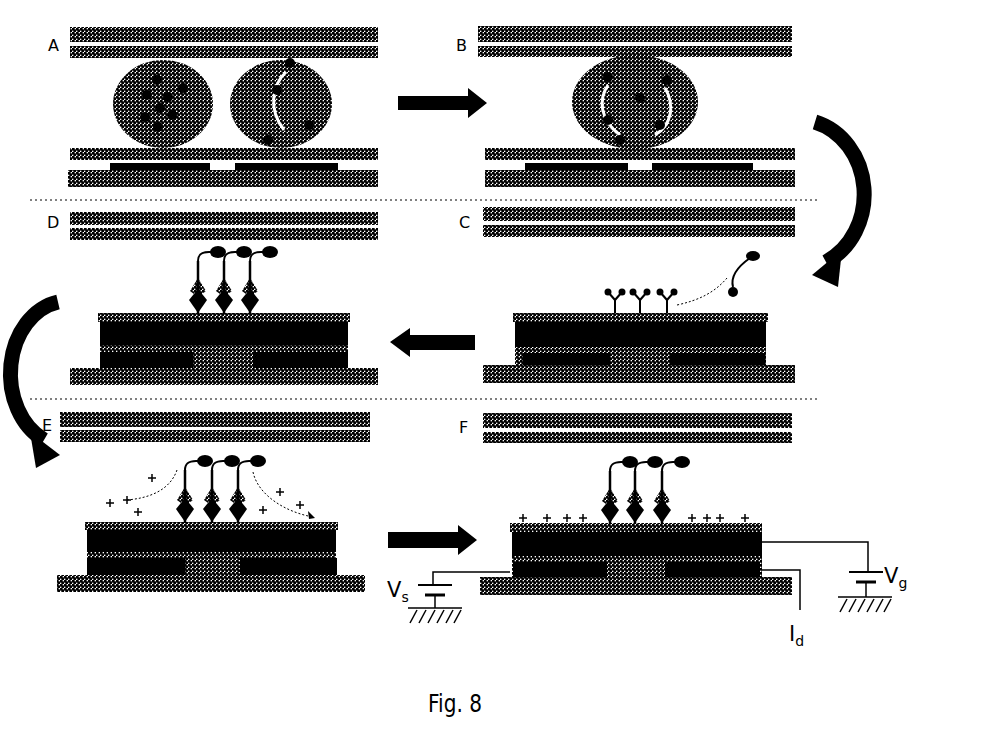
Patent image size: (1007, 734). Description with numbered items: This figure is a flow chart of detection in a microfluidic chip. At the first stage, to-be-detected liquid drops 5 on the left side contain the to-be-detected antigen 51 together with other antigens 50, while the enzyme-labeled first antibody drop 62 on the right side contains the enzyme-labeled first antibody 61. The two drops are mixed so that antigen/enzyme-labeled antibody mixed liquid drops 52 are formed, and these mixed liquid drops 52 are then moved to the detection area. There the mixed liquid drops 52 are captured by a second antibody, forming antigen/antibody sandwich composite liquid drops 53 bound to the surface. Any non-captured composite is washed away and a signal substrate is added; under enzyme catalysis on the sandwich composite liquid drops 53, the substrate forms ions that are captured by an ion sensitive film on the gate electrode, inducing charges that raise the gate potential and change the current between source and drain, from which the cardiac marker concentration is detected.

The to-be-detected liquid drops 5 is at (118, 128).
The other antigens 50 is at (146, 96).
The to-be-detected antigen 51 is at (155, 80).
The antigen/enzyme-labeled antibody mixed liquid drops 52 is at (673, 90).
The antigen/antibody sandwich composite liquid drops 53 is at (190, 292).
The enzyme-labeled first antibody 61 is at (293, 63).
The second droplet 62 is at (320, 91).